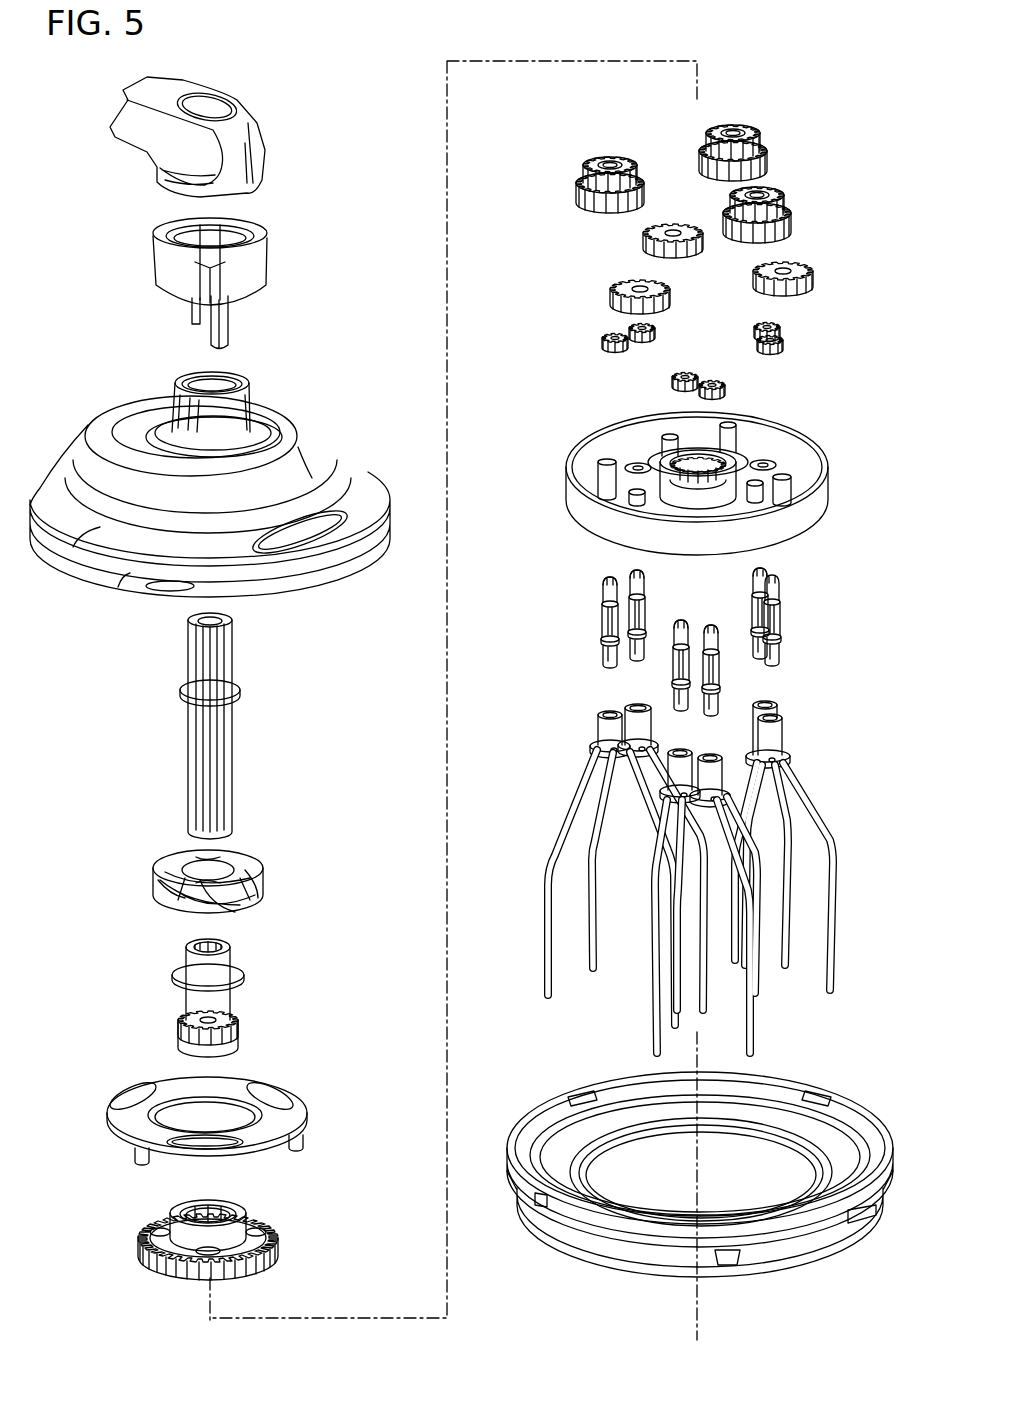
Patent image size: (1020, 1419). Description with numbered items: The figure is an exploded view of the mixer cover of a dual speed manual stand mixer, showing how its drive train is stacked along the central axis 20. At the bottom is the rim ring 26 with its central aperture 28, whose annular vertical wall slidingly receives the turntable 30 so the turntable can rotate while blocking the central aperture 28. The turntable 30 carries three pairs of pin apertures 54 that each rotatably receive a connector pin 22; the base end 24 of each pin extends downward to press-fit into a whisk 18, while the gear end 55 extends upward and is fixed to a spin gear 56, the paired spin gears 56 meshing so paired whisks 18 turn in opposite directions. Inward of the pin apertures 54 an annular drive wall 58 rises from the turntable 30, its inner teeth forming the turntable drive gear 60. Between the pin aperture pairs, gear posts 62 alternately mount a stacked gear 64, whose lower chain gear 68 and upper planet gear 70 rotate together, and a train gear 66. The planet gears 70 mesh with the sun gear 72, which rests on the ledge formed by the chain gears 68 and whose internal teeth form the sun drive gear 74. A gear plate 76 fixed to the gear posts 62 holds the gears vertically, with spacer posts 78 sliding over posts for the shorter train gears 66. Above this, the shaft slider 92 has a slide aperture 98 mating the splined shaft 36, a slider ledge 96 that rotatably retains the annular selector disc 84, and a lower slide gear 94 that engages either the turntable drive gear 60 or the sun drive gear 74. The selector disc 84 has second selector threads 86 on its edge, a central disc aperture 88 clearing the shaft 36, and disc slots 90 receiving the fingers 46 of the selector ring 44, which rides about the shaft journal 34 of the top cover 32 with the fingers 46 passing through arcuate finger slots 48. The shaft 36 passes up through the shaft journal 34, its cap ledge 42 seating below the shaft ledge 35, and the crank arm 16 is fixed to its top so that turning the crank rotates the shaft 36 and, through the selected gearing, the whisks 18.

The crank arm 16 is at (190, 80).
The selector ring 44 is at (268, 258).
The fingers 46 is at (193, 312).
The shaft journal 34 is at (222, 410).
The shaft ledge 35 is at (183, 377).
The finger slots 48 is at (248, 425).
The top cover 32 is at (350, 470).
The shaft 36 is at (232, 658).
The cap ledge 42 is at (238, 690).
The selector disc 84 is at (262, 864).
The central disc aperture 88 is at (230, 855).
The disc slots 90 is at (200, 852).
The second selector threads 86 is at (168, 885).
The shaft slider 92 is at (185, 998).
The slide aperture 98 is at (190, 935).
The slider ledge 96 is at (240, 975).
The slide gear 94 is at (180, 1032).
The gear plate 76 is at (235, 1080).
The spacer posts 78 is at (135, 1158).
The sun gear 72 is at (280, 1240).
The sun drive gear 74 is at (225, 1200).
The central axis 20 is at (212, 1310).
The stacked gear 64 is at (559, 178).
The planet gear 70 is at (605, 158).
The chain gear 68 is at (582, 186).
The train gear 66 is at (643, 238).
The spin gear 56 is at (645, 345).
The turntable 30 is at (828, 485).
The turntable drive gear 60 is at (700, 458).
The drive wall 58 is at (698, 490).
The pin apertures 54 is at (663, 448).
The gear posts 62 is at (640, 462).
The connector pin 22 is at (603, 612).
The base end 24 is at (603, 612).
The gear end 55 is at (617, 578).
The whisks 18 is at (567, 800).
The rim ring 26 is at (795, 1080).
The central aperture 28 is at (805, 1160).